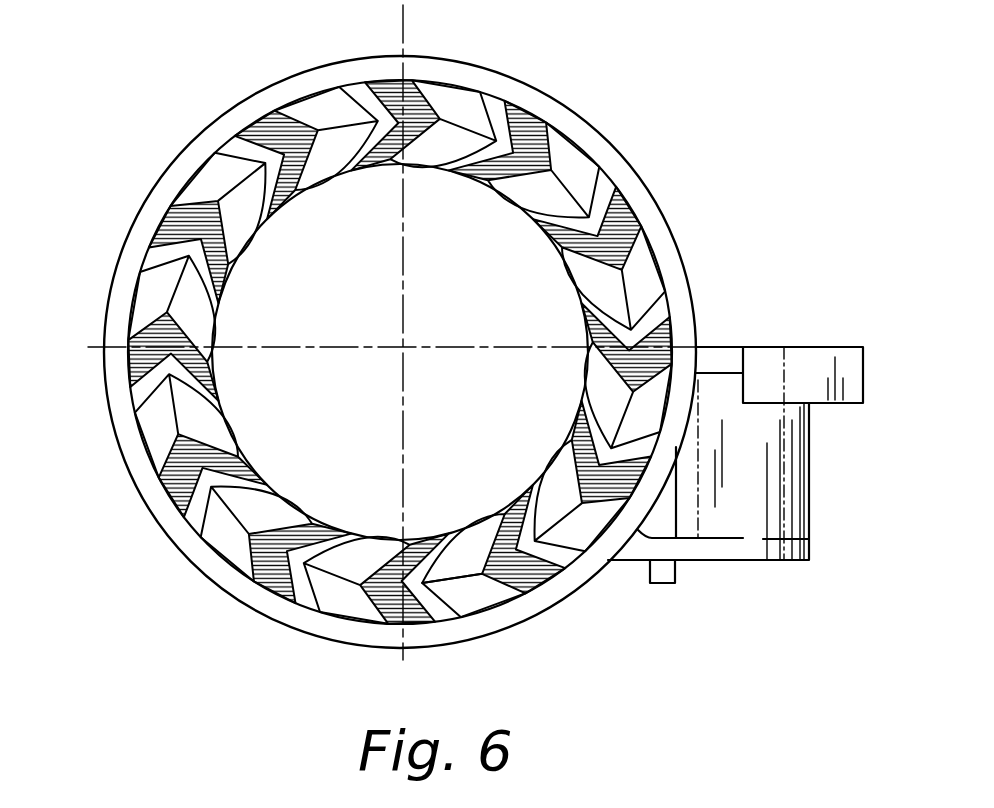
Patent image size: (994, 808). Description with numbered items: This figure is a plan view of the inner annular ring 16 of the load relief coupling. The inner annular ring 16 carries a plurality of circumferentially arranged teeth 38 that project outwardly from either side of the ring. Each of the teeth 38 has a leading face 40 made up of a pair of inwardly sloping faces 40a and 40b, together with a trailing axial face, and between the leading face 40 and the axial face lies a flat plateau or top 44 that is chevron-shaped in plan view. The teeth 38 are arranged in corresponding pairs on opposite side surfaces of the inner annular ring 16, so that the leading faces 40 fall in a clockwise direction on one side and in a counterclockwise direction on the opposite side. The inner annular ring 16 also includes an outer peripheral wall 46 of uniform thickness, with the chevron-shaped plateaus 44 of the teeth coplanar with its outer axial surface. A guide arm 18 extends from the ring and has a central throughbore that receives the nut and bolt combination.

The inner annular ring 16 is at (373, 344).
The guide arm 18 is at (812, 525).
The teeth 38 is at (178, 196).
The leading face 40 is at (525, 572).
The inwardly sloping face 40a is at (478, 528).
The inwardly sloping face 40b is at (503, 593).
The flat plateau 44 is at (302, 596).
The outer peripheral wall 46 is at (135, 473).